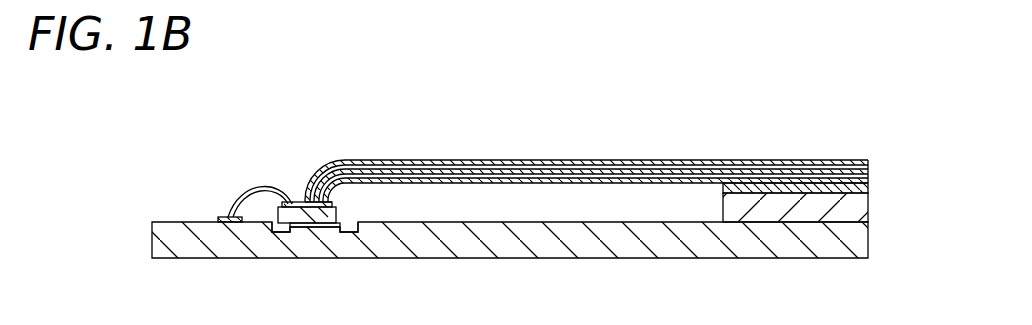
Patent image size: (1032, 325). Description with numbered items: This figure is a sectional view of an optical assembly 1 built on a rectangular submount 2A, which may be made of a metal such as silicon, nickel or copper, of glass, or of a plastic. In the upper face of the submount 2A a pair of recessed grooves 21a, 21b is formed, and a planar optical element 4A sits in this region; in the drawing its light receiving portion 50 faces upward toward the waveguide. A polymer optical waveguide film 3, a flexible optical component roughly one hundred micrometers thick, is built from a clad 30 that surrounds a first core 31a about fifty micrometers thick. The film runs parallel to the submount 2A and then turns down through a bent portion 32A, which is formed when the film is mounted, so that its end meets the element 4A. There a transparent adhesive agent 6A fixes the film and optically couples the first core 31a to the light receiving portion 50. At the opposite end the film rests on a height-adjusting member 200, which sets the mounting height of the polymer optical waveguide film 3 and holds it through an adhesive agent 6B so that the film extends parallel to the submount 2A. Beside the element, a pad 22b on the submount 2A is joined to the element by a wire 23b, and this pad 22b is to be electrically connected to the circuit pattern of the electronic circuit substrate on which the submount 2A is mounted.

The display device 1 is at (750, 78).
The submount 2A is at (604, 245).
The polymer optical waveguide film 3 is at (606, 124).
The light emitting element 4A is at (343, 212).
The adhesive agent 6A is at (312, 200).
The adhesive agent 6B is at (869, 188).
The groove 21a is at (287, 234).
The groove 21b is at (358, 234).
The pad 22b is at (221, 216).
The wire 23b is at (243, 187).
The clad 30 is at (438, 160).
The first core 31a is at (610, 162).
The bent portion 32A is at (303, 108).
The light receiving portion 50 is at (322, 229).
The height-adjusting member 200 is at (770, 210).